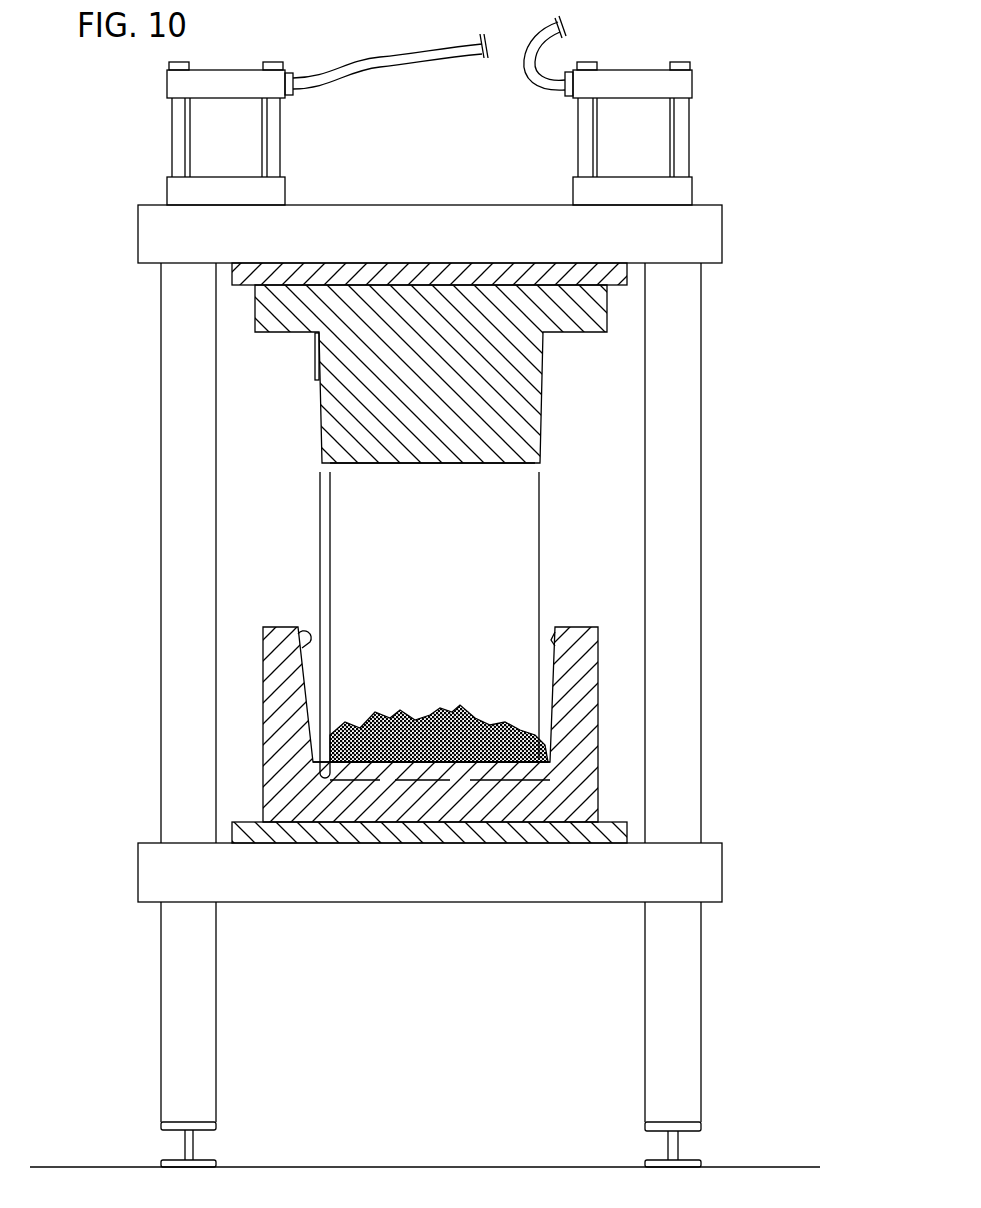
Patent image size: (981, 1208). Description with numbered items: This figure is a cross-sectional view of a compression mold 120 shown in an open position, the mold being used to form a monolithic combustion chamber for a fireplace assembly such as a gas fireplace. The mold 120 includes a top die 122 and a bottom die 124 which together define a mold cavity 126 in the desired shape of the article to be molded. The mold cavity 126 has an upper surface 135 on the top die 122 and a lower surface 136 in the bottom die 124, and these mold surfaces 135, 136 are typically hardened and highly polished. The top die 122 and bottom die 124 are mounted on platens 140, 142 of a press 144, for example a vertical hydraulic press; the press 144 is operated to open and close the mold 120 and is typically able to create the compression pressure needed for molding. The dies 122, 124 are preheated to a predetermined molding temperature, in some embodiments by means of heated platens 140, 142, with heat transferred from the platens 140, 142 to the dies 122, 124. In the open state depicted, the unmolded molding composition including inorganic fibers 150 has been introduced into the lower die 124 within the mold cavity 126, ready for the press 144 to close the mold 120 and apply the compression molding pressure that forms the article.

The compression mold 120 is at (494, 553).
The top die 122 is at (518, 367).
The bottom die 124 is at (585, 681).
The mold cavity 126 is at (547, 640).
The upper surface 135 is at (397, 466).
The lower surface 136 is at (332, 745).
The platen 140 is at (603, 272).
The platen 142 is at (617, 827).
The press 144 is at (137, 243).
The inorganic fibers 150 is at (447, 725).